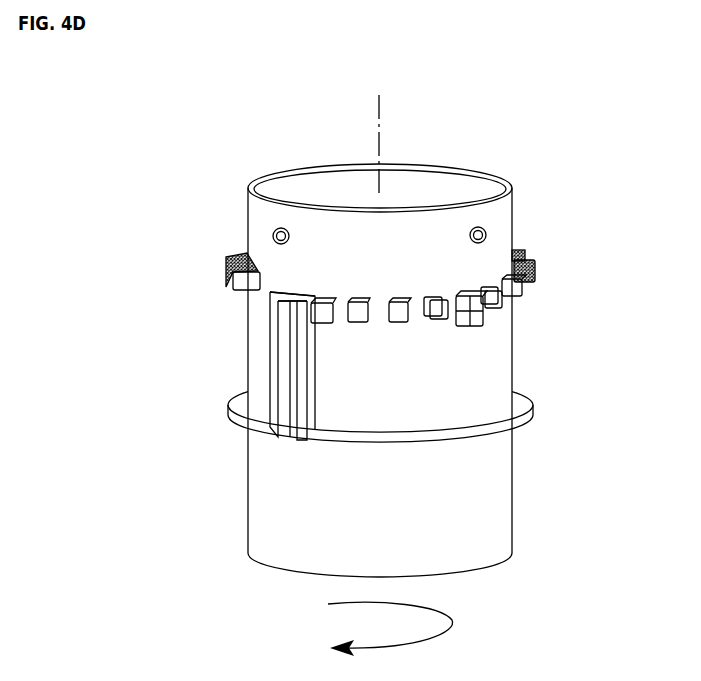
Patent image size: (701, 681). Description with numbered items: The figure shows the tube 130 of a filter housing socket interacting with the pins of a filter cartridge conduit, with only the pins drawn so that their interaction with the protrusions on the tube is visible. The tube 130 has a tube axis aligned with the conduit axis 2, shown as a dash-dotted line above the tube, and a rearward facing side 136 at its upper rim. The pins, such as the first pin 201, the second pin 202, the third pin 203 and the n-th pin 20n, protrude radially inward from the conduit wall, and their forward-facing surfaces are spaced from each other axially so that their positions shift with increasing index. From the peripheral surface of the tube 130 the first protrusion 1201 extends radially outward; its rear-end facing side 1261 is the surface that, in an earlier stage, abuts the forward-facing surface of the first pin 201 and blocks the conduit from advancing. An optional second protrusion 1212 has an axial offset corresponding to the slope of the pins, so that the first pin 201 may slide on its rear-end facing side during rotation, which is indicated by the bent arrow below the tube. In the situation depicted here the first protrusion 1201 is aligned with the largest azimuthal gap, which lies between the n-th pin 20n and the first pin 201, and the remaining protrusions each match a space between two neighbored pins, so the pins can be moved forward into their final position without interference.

The conduit axis 2 is at (381, 108).
The tube 130 is at (524, 378).
The rearward facing side 136 is at (472, 169).
The first protrusion 1201 is at (300, 293).
The rear-end facing side of the first protrusion 1261 is at (296, 283).
The n-th pin 20n is at (240, 266).
The first pin 201 is at (325, 300).
The second pin 202 is at (358, 325).
The third pin 203 is at (400, 300).
The second protrusion 1212 is at (462, 327).